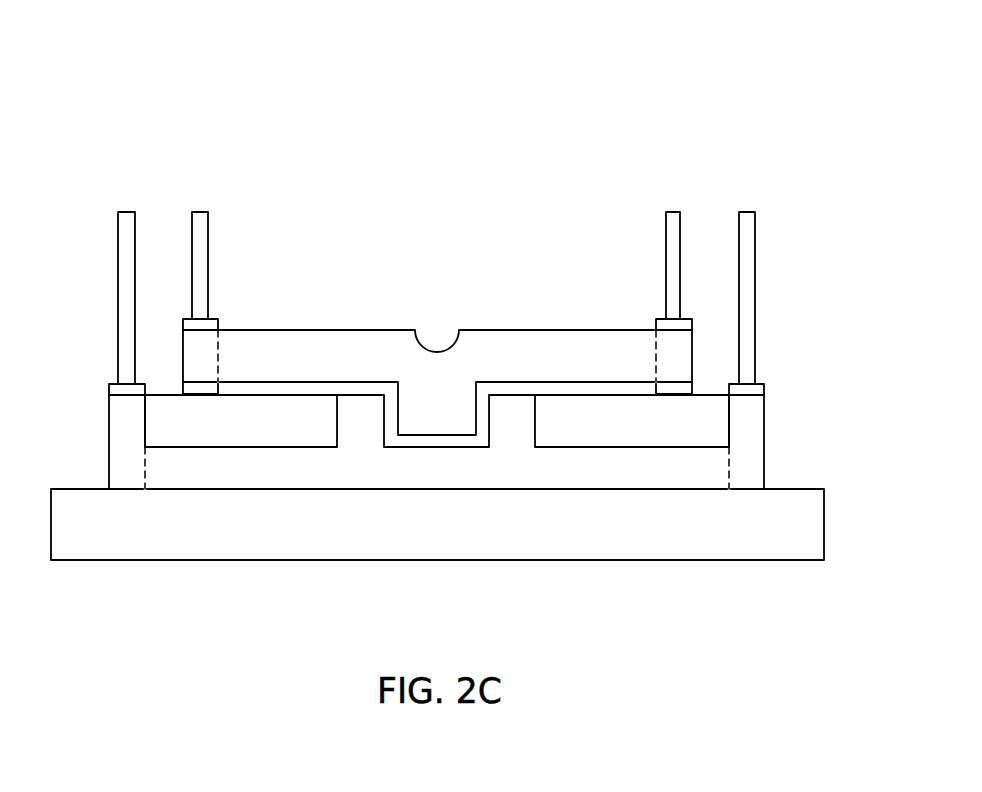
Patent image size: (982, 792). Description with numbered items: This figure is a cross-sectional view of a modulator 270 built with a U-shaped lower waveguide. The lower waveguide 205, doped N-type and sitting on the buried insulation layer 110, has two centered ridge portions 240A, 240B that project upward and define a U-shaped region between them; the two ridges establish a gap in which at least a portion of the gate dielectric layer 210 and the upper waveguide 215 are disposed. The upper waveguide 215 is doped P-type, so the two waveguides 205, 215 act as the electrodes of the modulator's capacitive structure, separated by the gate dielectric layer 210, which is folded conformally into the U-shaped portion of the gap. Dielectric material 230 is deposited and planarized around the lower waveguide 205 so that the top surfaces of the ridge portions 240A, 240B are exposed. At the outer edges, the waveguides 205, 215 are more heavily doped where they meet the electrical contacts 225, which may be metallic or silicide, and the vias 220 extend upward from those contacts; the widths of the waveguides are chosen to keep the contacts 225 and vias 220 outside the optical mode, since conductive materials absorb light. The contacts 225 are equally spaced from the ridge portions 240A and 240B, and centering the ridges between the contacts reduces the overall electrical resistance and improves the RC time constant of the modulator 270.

The buried insulation layer 110 is at (712, 535).
The lower waveguide 205 is at (693, 482).
The gate dielectric layer 210 is at (694, 386).
The upper waveguide 215 is at (602, 365).
The vias 220 is at (199, 211).
The electrical contacts 225 is at (105, 384).
The dielectric material 230 is at (248, 434).
The ridge portion 240A is at (357, 413).
The ridge portion 240B is at (514, 413).
The modulator 270 is at (642, 96).